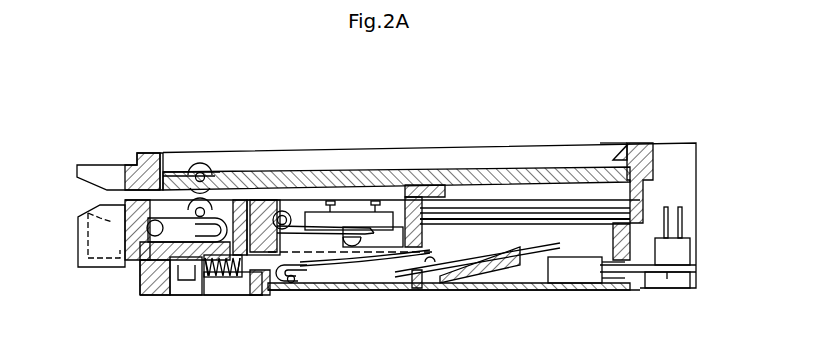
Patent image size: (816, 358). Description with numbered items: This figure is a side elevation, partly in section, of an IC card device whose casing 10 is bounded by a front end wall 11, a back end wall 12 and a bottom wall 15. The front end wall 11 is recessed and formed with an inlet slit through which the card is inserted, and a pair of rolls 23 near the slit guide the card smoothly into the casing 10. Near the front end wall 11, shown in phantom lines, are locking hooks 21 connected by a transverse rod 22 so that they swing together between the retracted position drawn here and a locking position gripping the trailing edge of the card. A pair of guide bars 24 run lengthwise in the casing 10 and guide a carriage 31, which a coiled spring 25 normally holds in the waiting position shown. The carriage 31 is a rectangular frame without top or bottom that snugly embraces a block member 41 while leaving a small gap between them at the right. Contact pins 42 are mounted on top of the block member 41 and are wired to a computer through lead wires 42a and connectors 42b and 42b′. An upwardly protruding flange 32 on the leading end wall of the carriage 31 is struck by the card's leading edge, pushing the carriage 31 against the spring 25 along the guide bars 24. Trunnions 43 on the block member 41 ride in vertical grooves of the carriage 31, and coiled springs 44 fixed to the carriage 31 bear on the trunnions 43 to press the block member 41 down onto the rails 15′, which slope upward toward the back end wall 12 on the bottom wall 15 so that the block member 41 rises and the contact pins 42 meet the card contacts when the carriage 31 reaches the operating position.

The casing 10 is at (518, 130).
The front end wall 11 is at (80, 257).
The back end wall 12 is at (690, 163).
The bottom wall 15 is at (395, 292).
The sloped rail 15′ is at (432, 262).
The locking hook 21 is at (108, 250).
The transverse rod 22 is at (162, 282).
The roll 23 is at (200, 168).
The guide bar 24 is at (577, 210).
The coiled spring 25 is at (222, 268).
The carriage 31 is at (412, 196).
The flange 32 is at (440, 185).
The block member 41 is at (323, 254).
The contact pin 42 is at (331, 200).
The lead wire 42a is at (291, 284).
The connector 42b is at (574, 280).
The connector 42b′ is at (685, 268).
The trunnion 43 is at (357, 246).
The coiled spring 44 is at (300, 222).